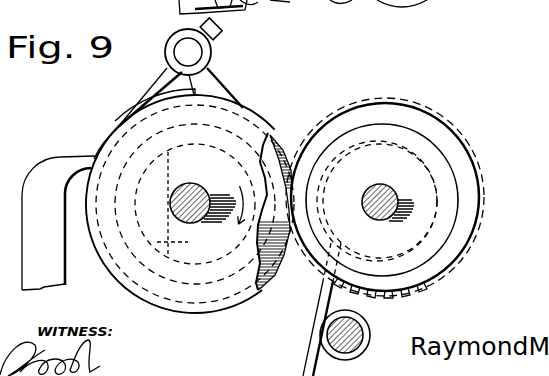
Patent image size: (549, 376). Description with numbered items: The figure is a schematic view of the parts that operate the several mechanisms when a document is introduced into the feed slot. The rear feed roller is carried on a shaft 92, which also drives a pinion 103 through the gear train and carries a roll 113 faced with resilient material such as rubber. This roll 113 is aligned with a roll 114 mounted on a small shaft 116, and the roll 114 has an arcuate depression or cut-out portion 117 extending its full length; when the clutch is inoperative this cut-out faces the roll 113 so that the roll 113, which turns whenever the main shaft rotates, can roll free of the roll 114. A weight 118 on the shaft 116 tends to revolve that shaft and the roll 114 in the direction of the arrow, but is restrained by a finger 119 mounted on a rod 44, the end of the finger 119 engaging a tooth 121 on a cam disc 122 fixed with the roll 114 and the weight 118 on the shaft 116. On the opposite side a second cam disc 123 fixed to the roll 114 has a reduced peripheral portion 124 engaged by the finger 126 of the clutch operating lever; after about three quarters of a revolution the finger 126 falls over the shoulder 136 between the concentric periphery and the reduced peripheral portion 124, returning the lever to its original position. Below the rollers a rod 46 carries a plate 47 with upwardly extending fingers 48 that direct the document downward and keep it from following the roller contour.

The rod 44 is at (197, 54).
The rod 46 is at (358, 334).
The plate 47 is at (308, 363).
The fingers 48 is at (330, 244).
The shaft 92 is at (385, 196).
The pinion 103 is at (426, 290).
The roll 113 is at (473, 171).
The roll 114 is at (274, 224).
The shaft 116 is at (192, 186).
The arcuate depression or cut-out portion 117 is at (295, 198).
The weight 118 is at (168, 242).
The finger 119 is at (140, 99).
The tooth 121 is at (116, 130).
The cam disc 122 is at (100, 143).
The cam disc 123 is at (247, 117).
The reduced peripheral portion 124 is at (100, 172).
The finger 126 is at (58, 223).
The shoulder 136 is at (165, 68).